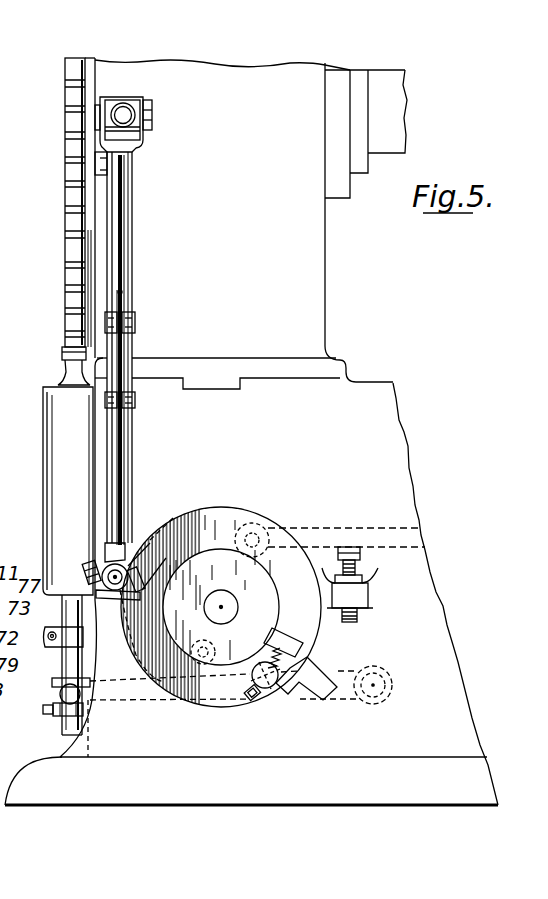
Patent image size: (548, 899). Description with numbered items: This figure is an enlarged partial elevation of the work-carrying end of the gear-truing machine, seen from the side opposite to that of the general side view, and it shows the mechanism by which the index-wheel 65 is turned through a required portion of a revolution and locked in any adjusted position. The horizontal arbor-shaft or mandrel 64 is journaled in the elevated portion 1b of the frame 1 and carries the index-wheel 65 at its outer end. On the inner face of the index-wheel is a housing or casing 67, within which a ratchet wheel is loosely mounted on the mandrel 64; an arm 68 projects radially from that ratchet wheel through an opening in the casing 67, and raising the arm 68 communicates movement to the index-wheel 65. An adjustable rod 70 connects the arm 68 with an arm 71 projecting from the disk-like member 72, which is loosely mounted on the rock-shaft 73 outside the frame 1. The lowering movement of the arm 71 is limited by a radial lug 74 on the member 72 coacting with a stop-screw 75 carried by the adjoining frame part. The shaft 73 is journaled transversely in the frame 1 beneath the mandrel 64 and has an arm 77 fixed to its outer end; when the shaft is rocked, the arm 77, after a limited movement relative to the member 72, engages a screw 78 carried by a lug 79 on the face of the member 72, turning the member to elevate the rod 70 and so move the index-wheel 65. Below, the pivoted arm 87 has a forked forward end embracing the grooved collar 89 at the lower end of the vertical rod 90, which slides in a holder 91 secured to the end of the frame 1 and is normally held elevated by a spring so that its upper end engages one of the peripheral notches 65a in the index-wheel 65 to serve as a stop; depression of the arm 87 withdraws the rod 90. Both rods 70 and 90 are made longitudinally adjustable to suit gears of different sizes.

The frame 1 is at (251, 434).
The elevated portion of the frame 1b is at (222, 208).
The arbor-shaft or mandrel 64 is at (388, 117).
The index-wheel 65 is at (66, 162).
The peripheral notches 65a is at (70, 307).
The housing or casing 67 is at (88, 207).
The arm 68 is at (128, 116).
The adjustable rod 70 is at (125, 282).
The arm 71 is at (138, 545).
The disk-like member 72 is at (207, 520).
The rock-shaft 73 is at (222, 608).
The radial lug 74 is at (320, 682).
The stop-screw 75 is at (358, 617).
The arm 77 is at (278, 632).
The screw 78 is at (260, 692).
The lug 79 is at (274, 683).
The arm 87 is at (80, 695).
The grooved collar 89 is at (62, 713).
The vertical rod 90 is at (62, 662).
The holder 91 is at (68, 491).